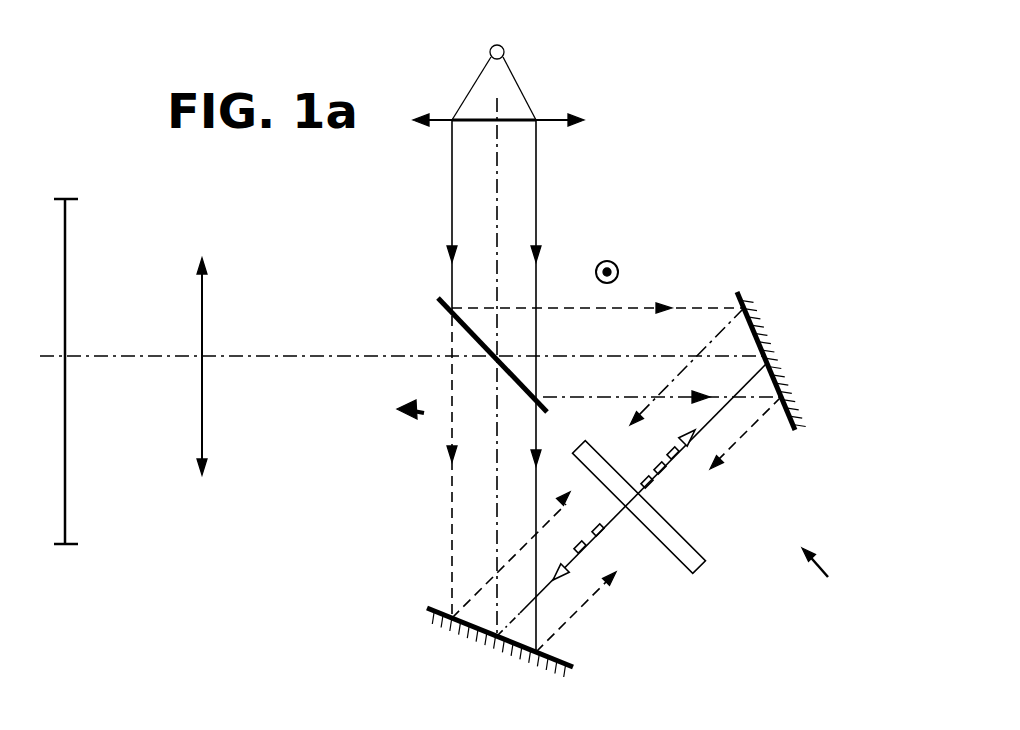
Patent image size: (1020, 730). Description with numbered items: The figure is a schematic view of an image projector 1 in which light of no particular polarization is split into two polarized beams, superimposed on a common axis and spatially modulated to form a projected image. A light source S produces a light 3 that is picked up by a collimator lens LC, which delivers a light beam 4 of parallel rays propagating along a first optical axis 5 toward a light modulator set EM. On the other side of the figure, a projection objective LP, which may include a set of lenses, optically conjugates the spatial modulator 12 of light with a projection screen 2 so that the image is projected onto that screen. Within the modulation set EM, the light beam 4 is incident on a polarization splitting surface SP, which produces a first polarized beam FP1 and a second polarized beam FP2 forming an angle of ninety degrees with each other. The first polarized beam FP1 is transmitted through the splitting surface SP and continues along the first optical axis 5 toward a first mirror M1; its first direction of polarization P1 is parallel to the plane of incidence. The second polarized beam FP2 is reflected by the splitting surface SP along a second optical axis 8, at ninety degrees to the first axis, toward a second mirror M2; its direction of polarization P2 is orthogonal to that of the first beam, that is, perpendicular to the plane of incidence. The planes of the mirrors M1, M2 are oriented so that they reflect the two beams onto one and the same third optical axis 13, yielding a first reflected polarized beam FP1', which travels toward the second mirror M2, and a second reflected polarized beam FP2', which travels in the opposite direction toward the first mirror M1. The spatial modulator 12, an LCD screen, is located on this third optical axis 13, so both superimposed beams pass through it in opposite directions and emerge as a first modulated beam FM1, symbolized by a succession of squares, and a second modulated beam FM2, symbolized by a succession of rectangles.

The image projector 1 is at (745, 152).
The projection screen 2 is at (66, 199).
The light 3 is at (518, 88).
The light beam 4 is at (518, 188).
The first optical axis 5 is at (497, 226).
The second optical axis 8 is at (602, 356).
The spatial modulator of light 12 is at (700, 568).
The third optical axis 13 is at (613, 514).
The light source S is at (494, 45).
The collimator lens Lc is at (556, 118).
The projection objective Lp is at (202, 305).
The polarization splitting surface SP is at (440, 306).
The first direction of polarization P1 is at (398, 420).
The direction of polarization of the second polarized beam P2 is at (612, 262).
The first polarized beam FP1 is at (476, 459).
The second polarized beam FP2 is at (598, 291).
The first reflected polarized beam FP1' is at (595, 618).
The second reflected polarized beam FP2' is at (748, 449).
The first modulated beam FM1 is at (664, 472).
The second modulated beam FM2 is at (604, 538).
The first mirror M1 is at (428, 608).
The second mirror M2 is at (748, 294).
The light modulator set EM is at (836, 569).